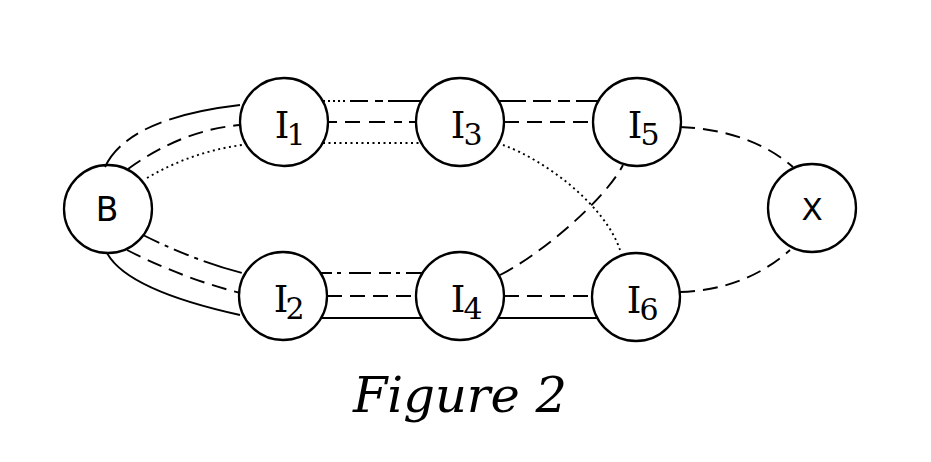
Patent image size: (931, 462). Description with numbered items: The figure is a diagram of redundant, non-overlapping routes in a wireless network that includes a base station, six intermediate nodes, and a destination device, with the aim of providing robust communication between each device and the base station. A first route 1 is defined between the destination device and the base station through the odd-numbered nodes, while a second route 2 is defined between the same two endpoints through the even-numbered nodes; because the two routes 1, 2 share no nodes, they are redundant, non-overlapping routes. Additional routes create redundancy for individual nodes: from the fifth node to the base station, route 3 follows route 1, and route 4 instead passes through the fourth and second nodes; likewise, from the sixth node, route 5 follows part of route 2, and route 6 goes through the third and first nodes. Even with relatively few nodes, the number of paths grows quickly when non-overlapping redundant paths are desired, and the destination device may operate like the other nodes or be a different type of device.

The first route 1 is at (740, 138).
The second route 2 is at (725, 285).
The route 3 is at (537, 102).
The route 4 is at (557, 248).
The route 5 is at (547, 320).
The route 6 is at (608, 222).